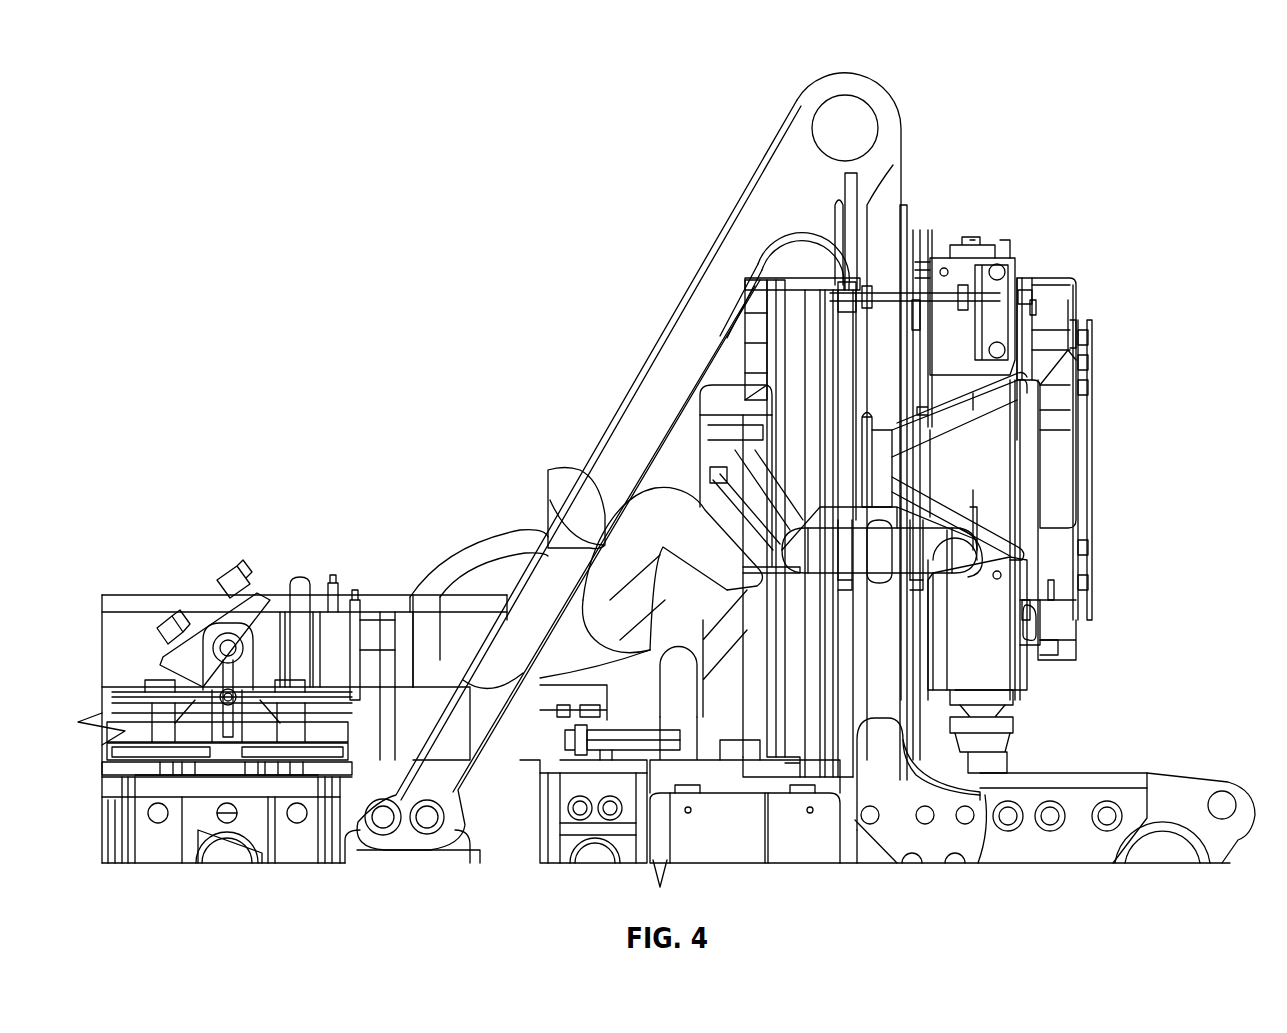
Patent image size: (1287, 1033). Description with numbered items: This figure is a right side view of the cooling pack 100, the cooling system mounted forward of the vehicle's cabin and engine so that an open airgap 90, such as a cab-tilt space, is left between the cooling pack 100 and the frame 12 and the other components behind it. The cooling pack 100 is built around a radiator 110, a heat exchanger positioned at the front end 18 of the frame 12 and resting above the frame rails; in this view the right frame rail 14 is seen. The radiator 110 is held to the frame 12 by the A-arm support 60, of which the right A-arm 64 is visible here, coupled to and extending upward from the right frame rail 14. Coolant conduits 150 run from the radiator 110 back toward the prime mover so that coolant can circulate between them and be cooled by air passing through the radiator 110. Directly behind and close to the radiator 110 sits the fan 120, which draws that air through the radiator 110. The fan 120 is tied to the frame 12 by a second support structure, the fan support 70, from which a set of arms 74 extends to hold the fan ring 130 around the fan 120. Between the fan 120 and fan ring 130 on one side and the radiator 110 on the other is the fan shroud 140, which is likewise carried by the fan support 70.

The frame 12 is at (1147, 768).
The right frame rail 14 is at (1013, 845).
The front end 18 is at (1058, 735).
The A-arm support 60 is at (897, 92).
The right A-arm 64 is at (848, 100).
The fan support 70 is at (680, 720).
The arms 74 is at (735, 400).
The airgap 90 is at (270, 492).
The cooling pack 100 is at (962, 205).
The radiator 110 is at (1040, 280).
The fan 120 is at (770, 333).
The fan ring 130 is at (755, 300).
The fan shroud 140 is at (818, 292).
The coolant conduits 150 is at (452, 552).